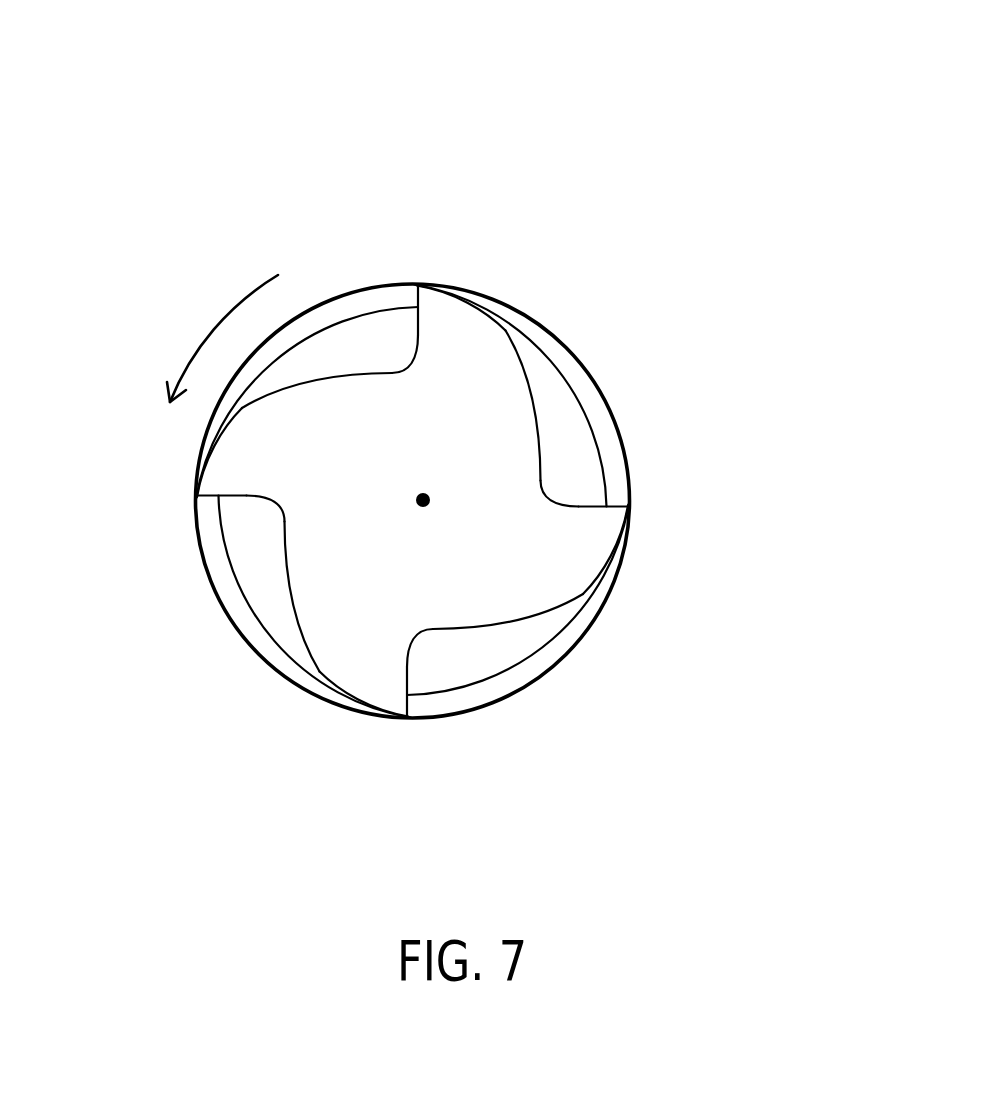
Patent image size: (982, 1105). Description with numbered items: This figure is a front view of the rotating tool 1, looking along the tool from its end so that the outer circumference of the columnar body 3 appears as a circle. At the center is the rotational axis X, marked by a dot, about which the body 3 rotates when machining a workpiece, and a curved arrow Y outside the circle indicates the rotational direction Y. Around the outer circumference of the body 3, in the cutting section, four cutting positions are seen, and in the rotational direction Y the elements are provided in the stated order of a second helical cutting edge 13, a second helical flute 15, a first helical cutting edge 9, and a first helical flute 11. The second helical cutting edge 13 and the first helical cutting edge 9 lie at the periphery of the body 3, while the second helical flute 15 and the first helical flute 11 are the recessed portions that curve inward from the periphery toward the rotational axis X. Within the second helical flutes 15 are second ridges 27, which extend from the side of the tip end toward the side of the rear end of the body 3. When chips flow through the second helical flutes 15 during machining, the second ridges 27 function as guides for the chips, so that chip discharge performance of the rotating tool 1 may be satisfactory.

The rotating tool 1 is at (536, 158).
The body 3 is at (621, 563).
The first helical cutting edge 9 is at (418, 285).
The first helical flute 11 is at (383, 371).
The second helical cutting edge 13 is at (631, 497).
The second helical flute 15 is at (551, 487).
The second ridge 27 is at (543, 468).
The rotational axis X is at (428, 505).
The rotational direction Y is at (221, 338).